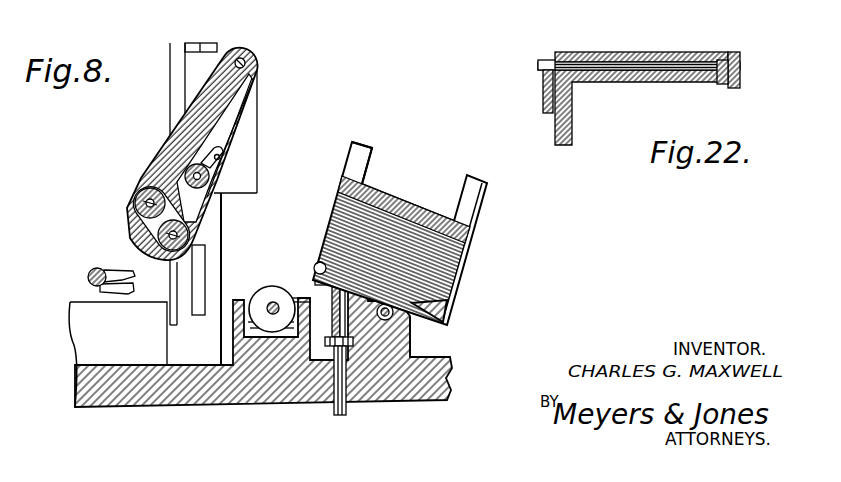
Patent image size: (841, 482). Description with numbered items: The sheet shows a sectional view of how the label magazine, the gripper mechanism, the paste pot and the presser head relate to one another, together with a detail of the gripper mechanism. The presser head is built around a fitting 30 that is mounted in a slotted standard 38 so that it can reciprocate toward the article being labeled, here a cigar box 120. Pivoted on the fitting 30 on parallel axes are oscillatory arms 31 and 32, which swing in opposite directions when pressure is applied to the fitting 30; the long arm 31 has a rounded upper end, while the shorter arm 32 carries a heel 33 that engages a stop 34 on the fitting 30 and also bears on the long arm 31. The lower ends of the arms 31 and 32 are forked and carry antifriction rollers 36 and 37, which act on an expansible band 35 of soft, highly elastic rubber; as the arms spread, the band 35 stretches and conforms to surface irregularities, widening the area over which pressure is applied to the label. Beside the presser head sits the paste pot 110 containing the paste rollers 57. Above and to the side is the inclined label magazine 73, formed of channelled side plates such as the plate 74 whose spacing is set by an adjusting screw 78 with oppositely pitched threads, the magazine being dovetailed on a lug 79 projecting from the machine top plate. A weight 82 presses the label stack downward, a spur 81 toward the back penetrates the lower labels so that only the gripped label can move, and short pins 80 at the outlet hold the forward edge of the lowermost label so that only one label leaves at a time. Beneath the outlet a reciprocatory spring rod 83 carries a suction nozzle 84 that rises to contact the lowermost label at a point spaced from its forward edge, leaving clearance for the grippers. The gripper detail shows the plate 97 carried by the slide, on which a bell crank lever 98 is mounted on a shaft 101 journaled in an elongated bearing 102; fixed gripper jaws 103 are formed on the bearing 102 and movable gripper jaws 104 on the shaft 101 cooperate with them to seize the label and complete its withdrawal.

In FIG. 8, the fitting 30 is at (246, 126).
In FIG. 8, the oscillatory arm 31 is at (252, 86).
In FIG. 8, the oscillatory arm 32 is at (214, 200).
In FIG. 8, the heel 33 is at (223, 165).
In FIG. 8, the stop 34 is at (227, 145).
In FIG. 8, the expansible band 35 is at (170, 147).
In FIG. 8, the antifriction roller 36 is at (131, 196).
In FIG. 8, the antifriction roller 37 is at (143, 233).
In FIG. 8, the slotted standard 38 is at (206, 256).
In FIG. 8, the paste rollers 57 is at (271, 286).
In FIG. 8, the label magazine 73 is at (474, 243).
In FIG. 8, the channelled side plate 74 is at (363, 157).
In FIG. 8, the adjusting screw 78 is at (410, 350).
In FIG. 8, the lug 79 is at (410, 343).
In FIG. 8, the short pins 80 is at (316, 262).
In FIG. 8, the spur 81 is at (448, 312).
In FIG. 8, the weight 82 is at (413, 203).
In FIG. 8, the reciprocatory spring rod 83 is at (335, 410).
In FIG. 8, the suction nozzle 84 is at (325, 300).
In FIG. 22, the plate 97 is at (572, 117).
In FIG. 22, the bell crank lever 98 is at (542, 95).
In FIG. 22, the shaft 101 is at (606, 60).
In FIG. 22, the elongated bearing 102 is at (668, 52).
In FIG. 8, the fixed gripper jaws 103 is at (112, 294).
In FIG. 22, the fixed gripper jaws 103 is at (720, 86).
In FIG. 8, the movable gripper jaws 104 is at (116, 268).
In FIG. 22, the movable gripper jaws 104 is at (725, 45).
In FIG. 8, the paste pot 110 is at (240, 302).
In FIG. 8, the cigar box 120 is at (118, 333).